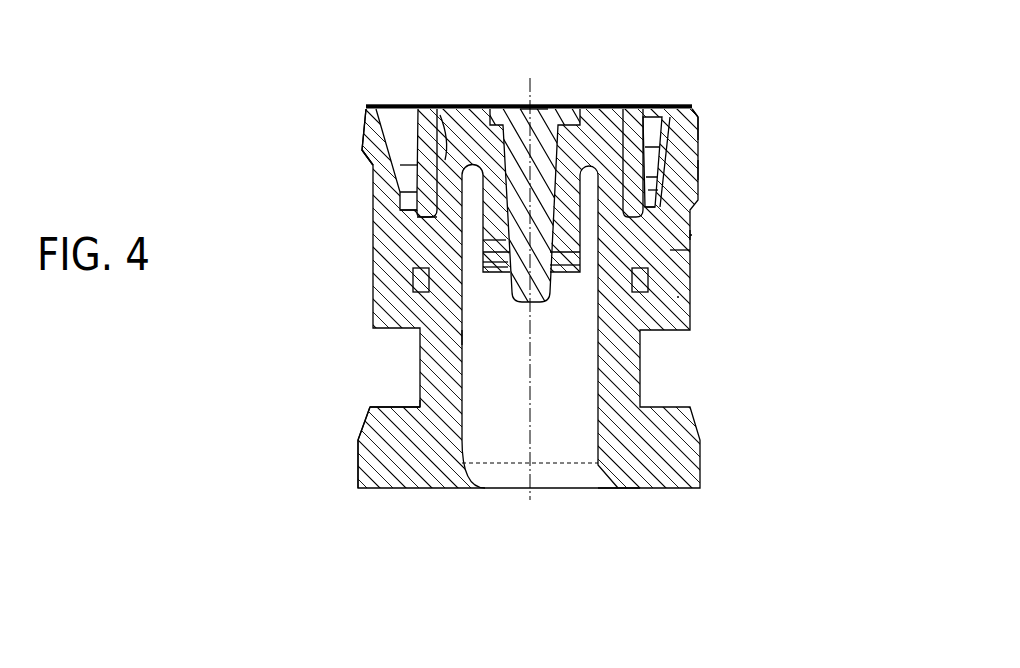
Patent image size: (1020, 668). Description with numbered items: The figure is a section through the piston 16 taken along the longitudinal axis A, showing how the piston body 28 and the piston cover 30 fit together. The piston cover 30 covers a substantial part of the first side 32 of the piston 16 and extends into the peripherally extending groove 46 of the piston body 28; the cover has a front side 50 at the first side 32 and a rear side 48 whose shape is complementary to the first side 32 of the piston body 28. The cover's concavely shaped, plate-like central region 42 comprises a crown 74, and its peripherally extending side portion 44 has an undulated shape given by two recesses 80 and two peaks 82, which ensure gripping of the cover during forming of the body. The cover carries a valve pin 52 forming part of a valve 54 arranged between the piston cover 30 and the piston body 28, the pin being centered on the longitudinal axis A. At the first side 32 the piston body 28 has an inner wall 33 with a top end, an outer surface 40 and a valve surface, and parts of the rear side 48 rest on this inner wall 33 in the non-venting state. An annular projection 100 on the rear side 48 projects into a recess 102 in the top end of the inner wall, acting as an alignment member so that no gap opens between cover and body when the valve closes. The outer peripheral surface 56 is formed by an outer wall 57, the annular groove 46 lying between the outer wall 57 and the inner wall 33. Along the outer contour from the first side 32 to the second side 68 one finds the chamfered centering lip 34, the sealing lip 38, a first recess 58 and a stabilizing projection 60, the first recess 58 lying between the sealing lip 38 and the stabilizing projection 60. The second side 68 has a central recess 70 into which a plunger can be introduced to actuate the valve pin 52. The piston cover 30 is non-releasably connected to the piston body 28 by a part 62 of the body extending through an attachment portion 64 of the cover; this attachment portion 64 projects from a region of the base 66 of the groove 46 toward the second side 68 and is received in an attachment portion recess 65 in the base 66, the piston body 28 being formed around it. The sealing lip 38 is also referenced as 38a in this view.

The piston 16 is at (808, 204).
The piston body 28 is at (696, 447).
The longitudinal axis A is at (524, 455).
The piston cover 30 is at (632, 99).
The first side 32 is at (388, 107).
The inner wall 33 is at (480, 238).
The centering portion 34 is at (368, 106).
The sealing lip 38 is at (362, 128).
The lip edge 38a is at (367, 157).
The outer surface 40 is at (404, 168).
The central region 42 is at (567, 112).
The side portion 44 is at (666, 190).
The groove 46 is at (675, 105).
The rear side 48 is at (680, 250).
The front side 50 is at (603, 113).
The valve pin 52 is at (648, 278).
The valve 54 is at (458, 330).
The outer peripheral surface 56 is at (360, 468).
The outer wall 57 is at (370, 417).
The first recess 58 is at (425, 400).
The stabilizing projection 60 is at (360, 483).
The part of the piston body 62 is at (485, 268).
The attachment portion 64 is at (420, 217).
The attachment portion recess 65 is at (655, 214).
The base 66 is at (404, 210).
The second side 68 is at (630, 490).
The central recess 70 is at (478, 462).
The crown 74 is at (540, 108).
The recess 80 is at (650, 143).
The peak 82 is at (668, 135).
The annular projection 100 is at (482, 118).
The recess 102 is at (440, 113).